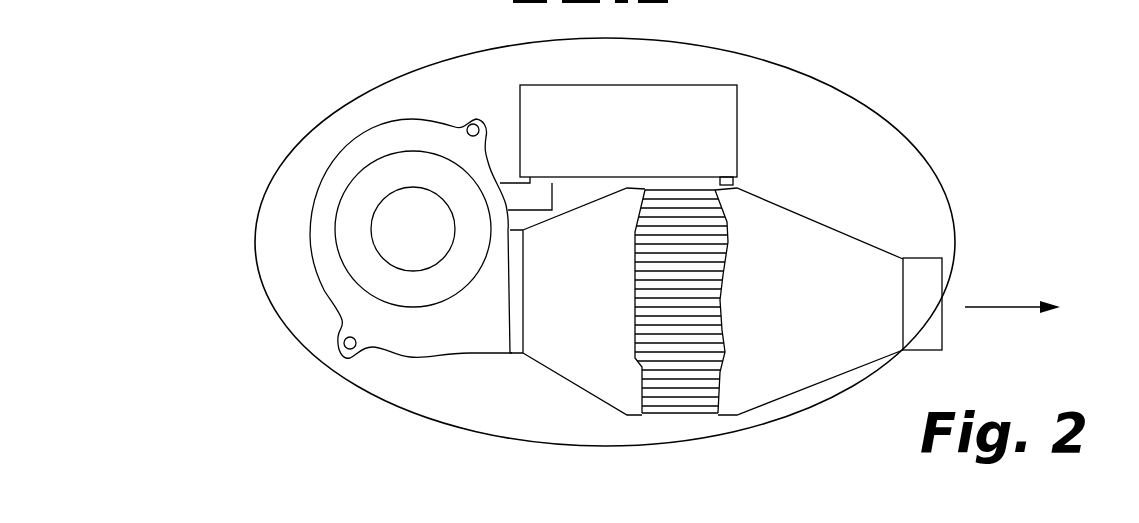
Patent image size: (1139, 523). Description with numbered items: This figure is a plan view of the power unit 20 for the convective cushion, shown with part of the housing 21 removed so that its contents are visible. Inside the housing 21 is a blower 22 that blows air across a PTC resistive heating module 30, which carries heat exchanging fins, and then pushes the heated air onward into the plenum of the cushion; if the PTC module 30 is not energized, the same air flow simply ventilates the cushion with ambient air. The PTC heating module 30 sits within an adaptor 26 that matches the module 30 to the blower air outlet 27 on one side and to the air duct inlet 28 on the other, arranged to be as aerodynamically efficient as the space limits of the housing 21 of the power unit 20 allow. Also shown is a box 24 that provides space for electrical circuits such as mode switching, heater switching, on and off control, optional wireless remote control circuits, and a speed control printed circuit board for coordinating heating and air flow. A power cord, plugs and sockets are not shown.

The power unit 20 is at (789, 61).
The housing 21 is at (388, 97).
The blower 22 is at (337, 150).
The box 24 is at (680, 85).
The adaptor 26 is at (817, 230).
The blower air outlet 27 is at (922, 258).
The air duct inlet 28 is at (518, 353).
The PTC resistive heating module 30 is at (663, 383).